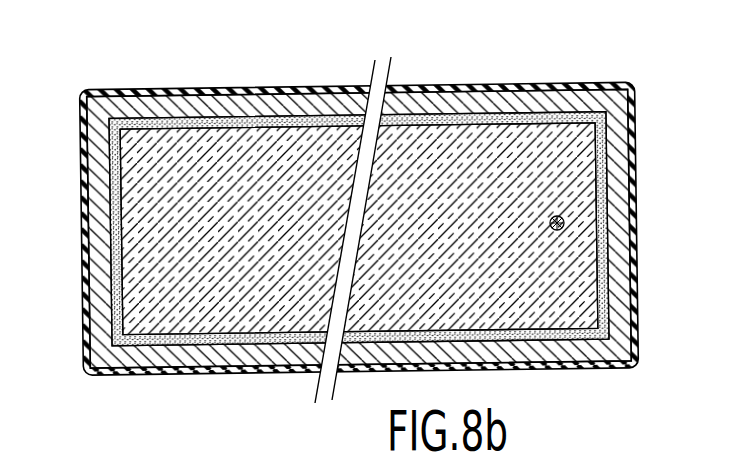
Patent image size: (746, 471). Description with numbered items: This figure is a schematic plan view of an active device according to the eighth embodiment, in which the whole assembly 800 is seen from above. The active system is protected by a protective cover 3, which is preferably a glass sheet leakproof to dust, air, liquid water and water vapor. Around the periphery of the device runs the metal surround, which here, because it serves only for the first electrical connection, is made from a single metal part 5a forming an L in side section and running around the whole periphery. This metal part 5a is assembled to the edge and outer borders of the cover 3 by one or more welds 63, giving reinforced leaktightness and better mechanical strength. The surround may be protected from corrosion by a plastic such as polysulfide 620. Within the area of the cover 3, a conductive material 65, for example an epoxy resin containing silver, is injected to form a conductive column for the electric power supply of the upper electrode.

The display device assembly 800 is at (367, 213).
The metal part of the surround 5a is at (96, 163).
The polysulfide 620 is at (633, 177).
The weld 63 is at (110, 293).
The protective cover 3 is at (282, 285).
The conductive material 65 is at (564, 222).